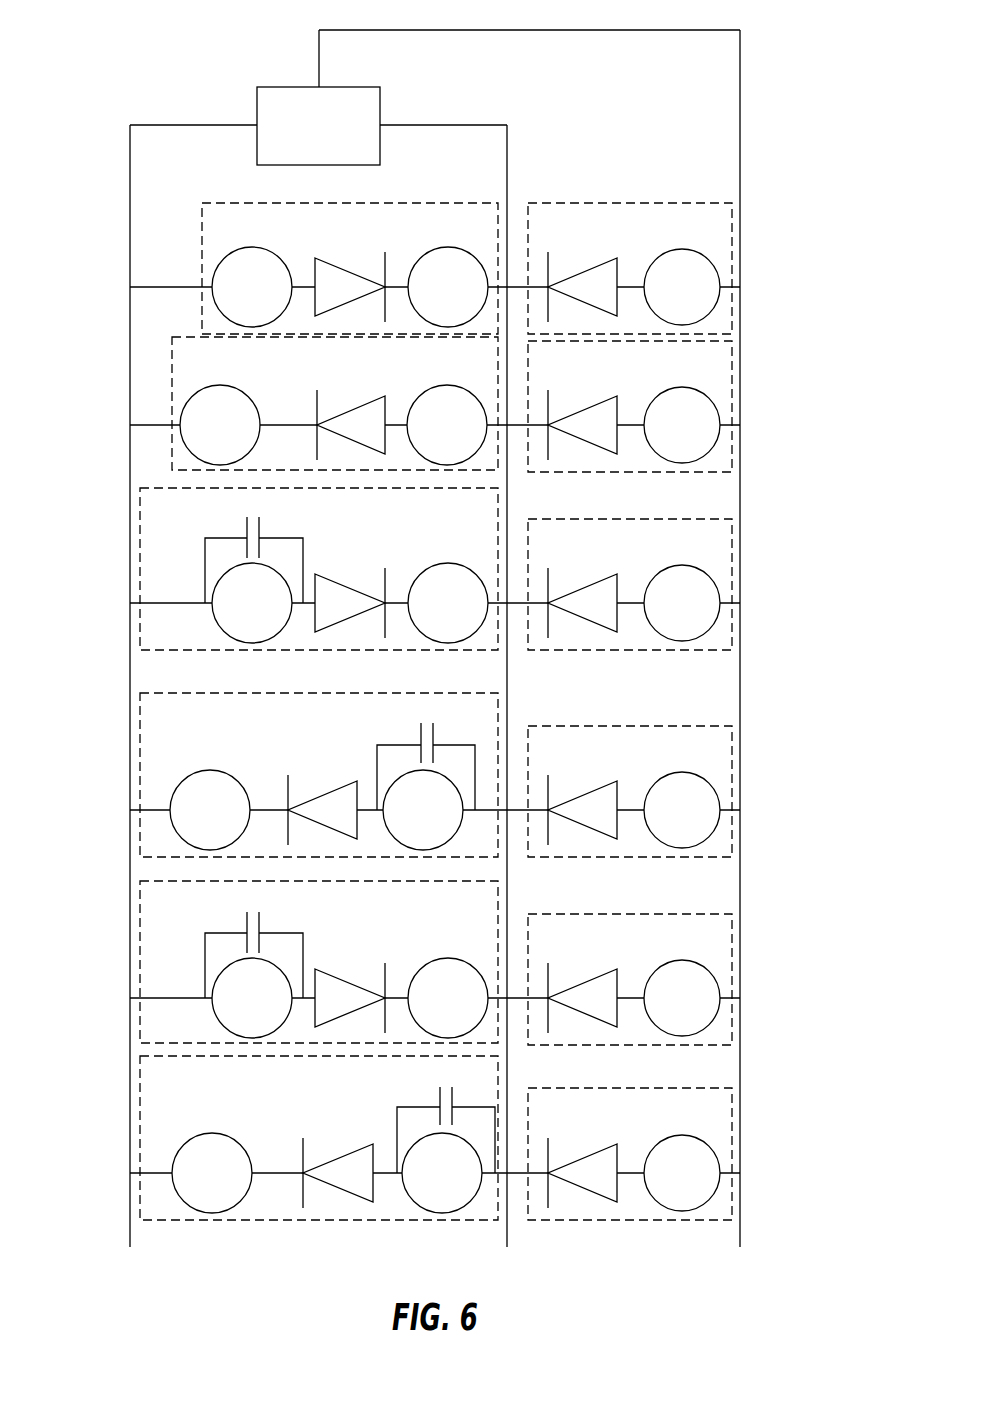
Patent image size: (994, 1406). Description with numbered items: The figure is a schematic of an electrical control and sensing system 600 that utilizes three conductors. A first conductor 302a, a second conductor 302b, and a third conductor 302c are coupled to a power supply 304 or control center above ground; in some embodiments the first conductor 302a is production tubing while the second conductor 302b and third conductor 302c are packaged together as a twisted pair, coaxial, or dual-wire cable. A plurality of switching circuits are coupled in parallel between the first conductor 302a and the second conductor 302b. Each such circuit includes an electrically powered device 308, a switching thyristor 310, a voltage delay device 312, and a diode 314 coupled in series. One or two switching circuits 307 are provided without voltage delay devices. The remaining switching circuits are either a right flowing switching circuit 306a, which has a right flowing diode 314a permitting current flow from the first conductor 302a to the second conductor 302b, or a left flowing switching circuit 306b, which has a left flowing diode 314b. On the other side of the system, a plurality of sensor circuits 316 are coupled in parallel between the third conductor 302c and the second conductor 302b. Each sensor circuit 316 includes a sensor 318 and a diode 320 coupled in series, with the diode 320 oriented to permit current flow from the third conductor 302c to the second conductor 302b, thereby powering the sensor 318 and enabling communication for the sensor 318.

The electrical control and sensing system 600 is at (127, 36).
The power supply 304 is at (362, 86).
The first conductor 302a is at (130, 163).
The second conductor 302b is at (507, 163).
The third conductor 302c is at (740, 163).
The switching circuit without voltage delay device 307 is at (202, 266).
The right flowing switching circuit 306a is at (140, 535).
The left flowing switching circuit 306b is at (140, 740).
The electrically powered device 308 is at (448, 247).
The switching thyristor 310 is at (252, 247).
The voltage delay device 312 is at (247, 528).
The diode 314 is at (332, 265).
The right flowing diode 314a is at (328, 579).
The left flowing diode 314b is at (333, 791).
The sensor circuit 316 is at (732, 223).
The sensor 318 is at (682, 249).
The diode 320 is at (583, 272).